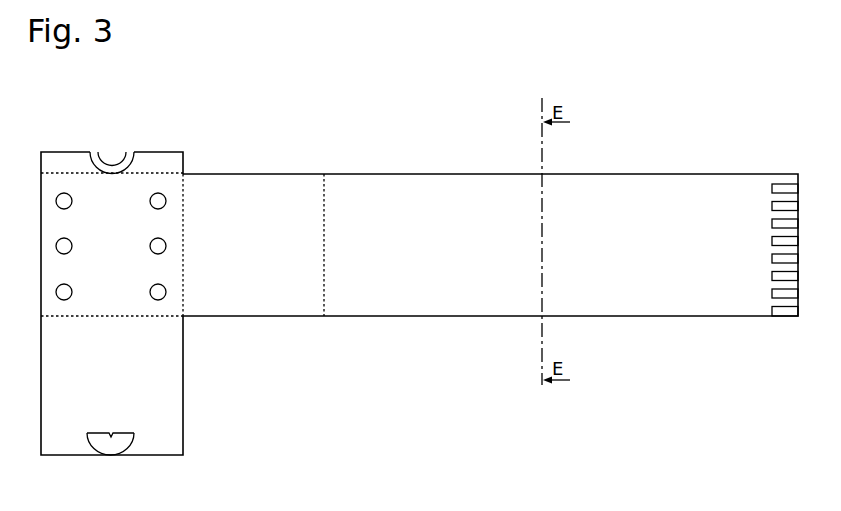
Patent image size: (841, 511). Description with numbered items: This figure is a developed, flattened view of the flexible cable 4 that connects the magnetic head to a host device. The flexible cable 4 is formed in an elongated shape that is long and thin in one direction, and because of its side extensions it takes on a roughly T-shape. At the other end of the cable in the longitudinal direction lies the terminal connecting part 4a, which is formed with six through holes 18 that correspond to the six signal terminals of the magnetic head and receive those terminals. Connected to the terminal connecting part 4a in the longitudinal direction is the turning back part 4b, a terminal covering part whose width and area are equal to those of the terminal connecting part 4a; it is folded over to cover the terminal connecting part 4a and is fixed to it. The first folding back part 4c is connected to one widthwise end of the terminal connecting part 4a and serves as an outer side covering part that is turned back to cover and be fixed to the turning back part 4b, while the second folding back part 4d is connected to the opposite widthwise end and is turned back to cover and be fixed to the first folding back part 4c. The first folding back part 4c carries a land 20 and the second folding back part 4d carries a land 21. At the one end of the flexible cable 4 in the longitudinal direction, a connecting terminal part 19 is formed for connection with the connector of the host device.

The flexible cable 4 is at (640, 122).
The terminal connecting part 4a is at (112, 307).
The turning back part 4b is at (273, 304).
The first folding back part 4c is at (175, 408).
The second folding back part 4d is at (177, 162).
The through holes 18 is at (72, 200).
The connecting terminal part 19 is at (782, 156).
The land 20 is at (111, 447).
The land 21 is at (113, 166).